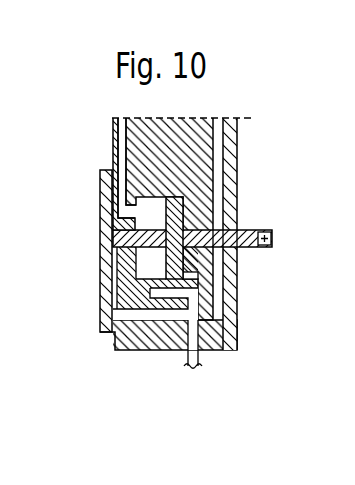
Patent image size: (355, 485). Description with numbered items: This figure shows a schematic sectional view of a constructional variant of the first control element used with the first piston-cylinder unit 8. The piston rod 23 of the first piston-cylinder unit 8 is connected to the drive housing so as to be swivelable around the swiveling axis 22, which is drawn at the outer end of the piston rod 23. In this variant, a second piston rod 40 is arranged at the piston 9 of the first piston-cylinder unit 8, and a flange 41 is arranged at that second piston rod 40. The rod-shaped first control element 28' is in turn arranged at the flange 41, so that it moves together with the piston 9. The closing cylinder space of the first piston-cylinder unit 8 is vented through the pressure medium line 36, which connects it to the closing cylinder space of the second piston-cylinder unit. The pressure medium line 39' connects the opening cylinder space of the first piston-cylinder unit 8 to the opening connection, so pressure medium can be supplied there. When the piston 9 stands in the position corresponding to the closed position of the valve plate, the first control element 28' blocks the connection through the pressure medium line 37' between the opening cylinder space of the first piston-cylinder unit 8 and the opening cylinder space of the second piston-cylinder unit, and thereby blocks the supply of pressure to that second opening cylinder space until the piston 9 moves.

The first piston-cylinder unit 8 is at (196, 216).
The piston 9 is at (185, 197).
The swiveling axis 22 is at (267, 231).
The piston rod 23 is at (240, 241).
The first control element 28' is at (160, 353).
The pressure medium line 36 is at (120, 173).
The pressure medium line 37' is at (263, 234).
The pressure medium line 39' is at (166, 352).
The second piston rod 40 is at (121, 171).
The flange 41 is at (108, 258).